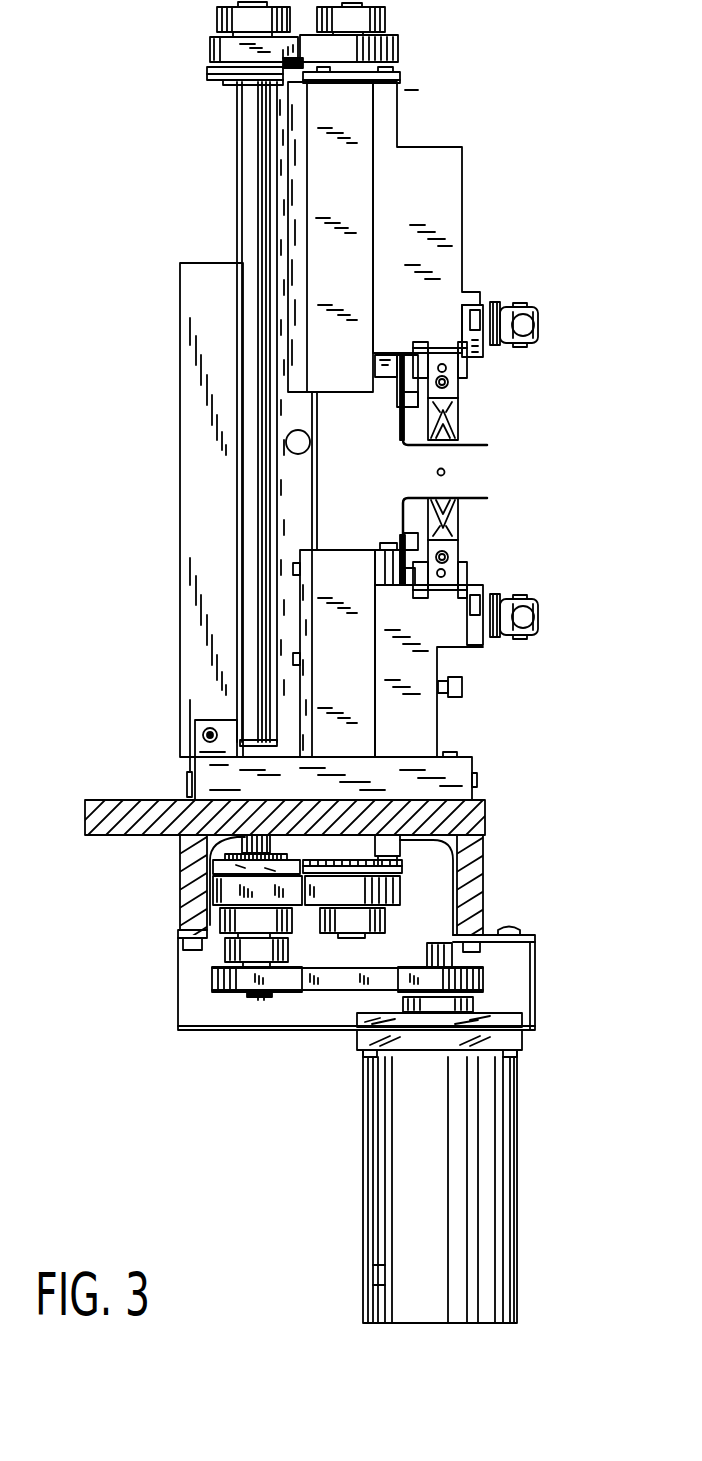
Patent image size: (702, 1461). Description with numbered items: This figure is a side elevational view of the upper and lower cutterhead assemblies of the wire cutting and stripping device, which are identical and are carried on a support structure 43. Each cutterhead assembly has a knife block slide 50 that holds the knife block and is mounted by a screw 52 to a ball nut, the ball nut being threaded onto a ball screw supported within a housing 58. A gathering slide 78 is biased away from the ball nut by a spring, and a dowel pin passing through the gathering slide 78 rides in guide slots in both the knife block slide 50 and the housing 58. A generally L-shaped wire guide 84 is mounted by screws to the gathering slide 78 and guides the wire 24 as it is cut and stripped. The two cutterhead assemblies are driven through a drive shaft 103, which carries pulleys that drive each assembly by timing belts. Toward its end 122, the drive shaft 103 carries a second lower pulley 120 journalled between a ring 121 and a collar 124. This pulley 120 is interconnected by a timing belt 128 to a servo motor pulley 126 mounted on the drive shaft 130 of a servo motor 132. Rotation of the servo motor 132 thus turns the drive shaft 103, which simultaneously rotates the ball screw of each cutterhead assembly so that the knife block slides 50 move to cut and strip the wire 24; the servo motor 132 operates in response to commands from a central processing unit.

The wire 24 is at (446, 471).
The support structure 43 is at (141, 792).
The knife block slide 50 is at (437, 197).
The screw 52 is at (463, 688).
The housing 58 is at (355, 197).
The gathering slide 78 is at (392, 535).
The wire guide 84 is at (474, 436).
The drive shaft 103 is at (252, 216).
The second lower pulley 120 is at (213, 990).
The ring 121 is at (262, 998).
The end of drive shaft 122 is at (248, 1006).
The collar 124 is at (233, 950).
The servo motor pulley 126 is at (480, 968).
The timing belt 128 is at (339, 998).
The drive shaft of servo motor 130 is at (437, 944).
The servo motor 132 is at (500, 1145).